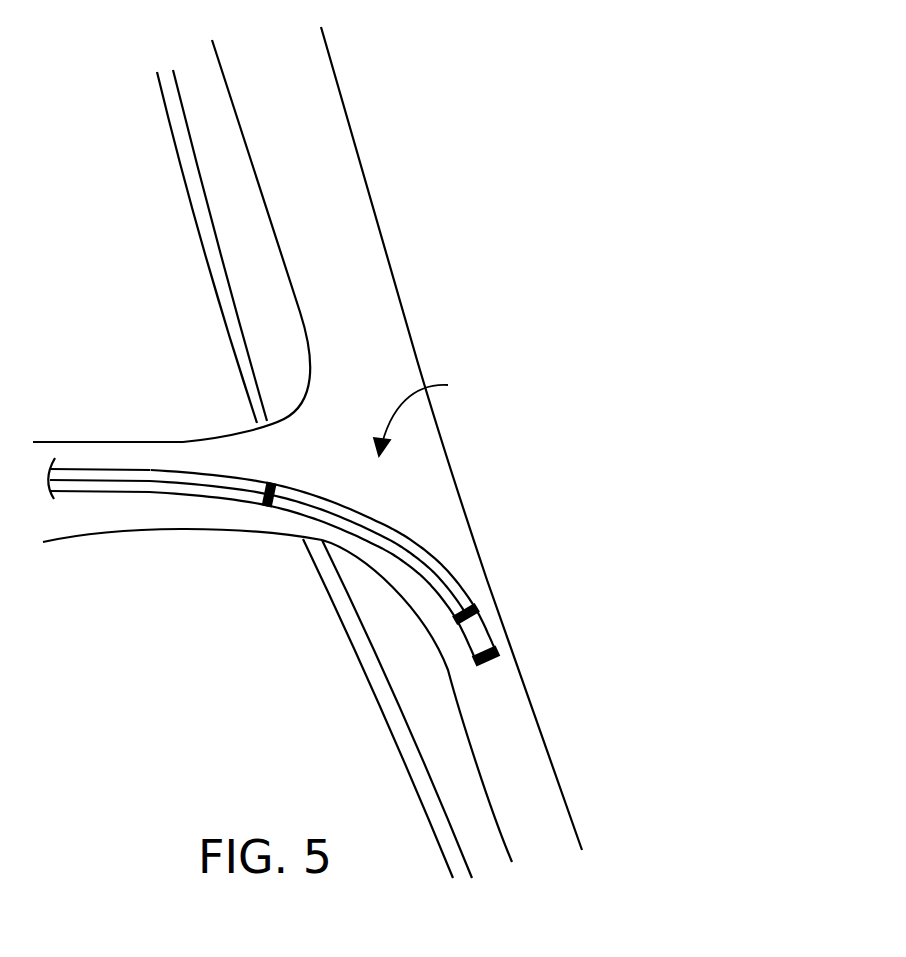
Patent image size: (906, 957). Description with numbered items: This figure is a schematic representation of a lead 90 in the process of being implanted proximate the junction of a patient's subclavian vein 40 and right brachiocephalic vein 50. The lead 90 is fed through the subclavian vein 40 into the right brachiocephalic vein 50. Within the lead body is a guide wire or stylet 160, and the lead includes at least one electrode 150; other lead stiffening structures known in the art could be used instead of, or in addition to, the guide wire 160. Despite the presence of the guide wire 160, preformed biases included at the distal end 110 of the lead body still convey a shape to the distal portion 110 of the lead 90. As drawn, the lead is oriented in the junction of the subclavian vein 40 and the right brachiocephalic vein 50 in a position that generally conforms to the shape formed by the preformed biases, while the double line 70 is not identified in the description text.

The subclavian vein 40 is at (115, 452).
The right brachiocephalic vein 50 is at (513, 708).
The vessel wall 70 is at (212, 275).
The lead 90 is at (218, 497).
The distal end of the lead body 110 is at (432, 413).
The electrode 150 is at (480, 608).
The guide wire 160 is at (116, 481).